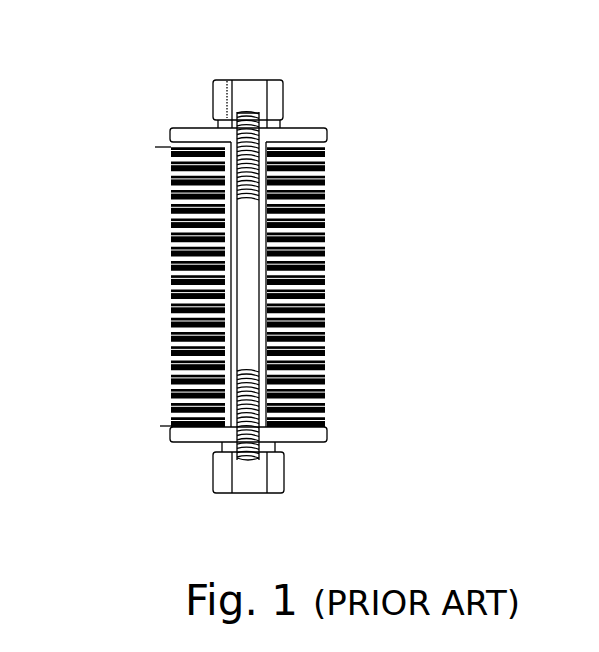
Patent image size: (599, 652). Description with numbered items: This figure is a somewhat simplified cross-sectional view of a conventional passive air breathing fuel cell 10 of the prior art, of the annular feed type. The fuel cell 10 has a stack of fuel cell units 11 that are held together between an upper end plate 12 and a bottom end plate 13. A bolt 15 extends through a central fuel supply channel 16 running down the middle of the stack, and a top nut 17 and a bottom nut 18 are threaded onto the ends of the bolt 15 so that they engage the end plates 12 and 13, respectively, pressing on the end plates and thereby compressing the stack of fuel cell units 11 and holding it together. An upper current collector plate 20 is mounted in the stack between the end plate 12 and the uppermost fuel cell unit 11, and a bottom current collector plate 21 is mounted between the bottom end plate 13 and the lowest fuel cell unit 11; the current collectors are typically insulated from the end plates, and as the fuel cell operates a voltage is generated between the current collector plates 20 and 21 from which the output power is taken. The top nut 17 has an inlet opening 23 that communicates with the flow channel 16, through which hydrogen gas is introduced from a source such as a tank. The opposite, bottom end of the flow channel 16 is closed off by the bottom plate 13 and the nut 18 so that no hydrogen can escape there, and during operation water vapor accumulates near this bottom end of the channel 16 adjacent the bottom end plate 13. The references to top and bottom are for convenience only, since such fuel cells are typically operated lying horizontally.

The fuel cell 10 is at (375, 134).
The fuel cell units 11 is at (325, 210).
The end plate 12 is at (298, 128).
The end plate 13 is at (317, 440).
The bolt 15 is at (250, 298).
The central fuel supply channel 16 is at (268, 382).
The top nut 17 is at (213, 98).
The nut 18 is at (224, 477).
The upper current collector plate 20 is at (158, 148).
The bottom current collector plate 21 is at (158, 431).
The inlet opening 23 is at (228, 80).